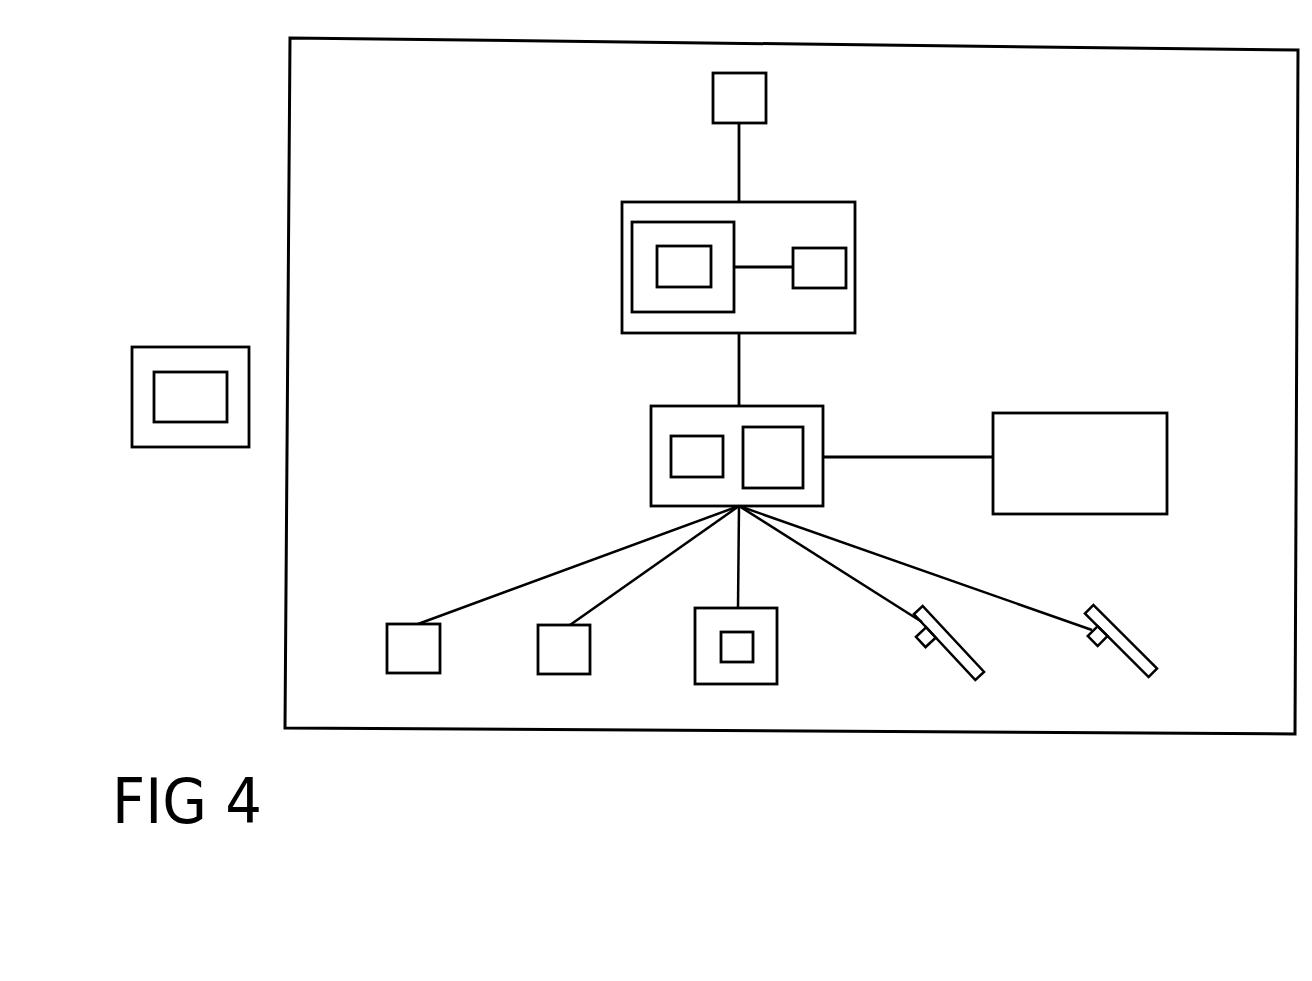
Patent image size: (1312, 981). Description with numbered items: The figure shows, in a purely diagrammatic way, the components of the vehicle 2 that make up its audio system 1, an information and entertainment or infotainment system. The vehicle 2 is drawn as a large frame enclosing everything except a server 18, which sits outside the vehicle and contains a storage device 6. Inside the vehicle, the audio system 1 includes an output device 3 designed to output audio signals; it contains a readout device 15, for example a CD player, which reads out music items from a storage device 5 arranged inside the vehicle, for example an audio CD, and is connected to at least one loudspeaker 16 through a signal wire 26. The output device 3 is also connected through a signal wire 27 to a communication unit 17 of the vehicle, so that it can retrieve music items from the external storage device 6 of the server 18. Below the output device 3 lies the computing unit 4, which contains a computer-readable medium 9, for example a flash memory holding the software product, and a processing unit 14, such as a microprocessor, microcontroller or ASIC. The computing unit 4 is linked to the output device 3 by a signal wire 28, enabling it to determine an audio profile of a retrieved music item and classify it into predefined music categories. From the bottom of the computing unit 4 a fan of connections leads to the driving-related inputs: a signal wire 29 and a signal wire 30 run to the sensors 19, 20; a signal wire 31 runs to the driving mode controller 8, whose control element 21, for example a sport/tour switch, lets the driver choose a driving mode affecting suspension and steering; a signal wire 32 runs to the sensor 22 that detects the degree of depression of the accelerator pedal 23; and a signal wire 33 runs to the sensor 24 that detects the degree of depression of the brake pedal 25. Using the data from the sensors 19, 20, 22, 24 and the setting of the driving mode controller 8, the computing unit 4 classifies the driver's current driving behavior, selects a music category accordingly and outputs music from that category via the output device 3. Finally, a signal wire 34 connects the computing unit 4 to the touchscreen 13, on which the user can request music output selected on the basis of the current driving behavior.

The audio system 1 is at (482, 180).
The vehicle 2 is at (1230, 710).
The output device 3 is at (833, 315).
The computing unit 4 is at (697, 420).
The storage device 5 is at (678, 262).
The storage device 6 is at (180, 402).
The driving mode controller 8 is at (763, 648).
The computer-readable medium 9 is at (688, 458).
The touchscreen 13 is at (1147, 473).
The processing unit 14 is at (783, 468).
The readout device 15 is at (648, 235).
The loudspeaker 16 is at (830, 268).
The communication unit 17 is at (750, 100).
The server 18 is at (197, 363).
The sensor 19 is at (423, 652).
The sensor 20 is at (575, 653).
The control element 21 is at (730, 645).
The sensor 22 is at (928, 643).
The accelerator pedal 23 is at (965, 648).
The sensor 24 is at (1100, 643).
The brake pedal 25 is at (1132, 650).
The signal wire 26 is at (747, 267).
The signal wire 27 is at (740, 155).
The signal wire 28 is at (740, 368).
The signal wire 29 is at (552, 572).
The signal wire 30 is at (643, 568).
The signal wire 31 is at (740, 567).
The signal wire 32 is at (863, 590).
The signal wire 33 is at (942, 580).
The signal wire 34 is at (925, 458).